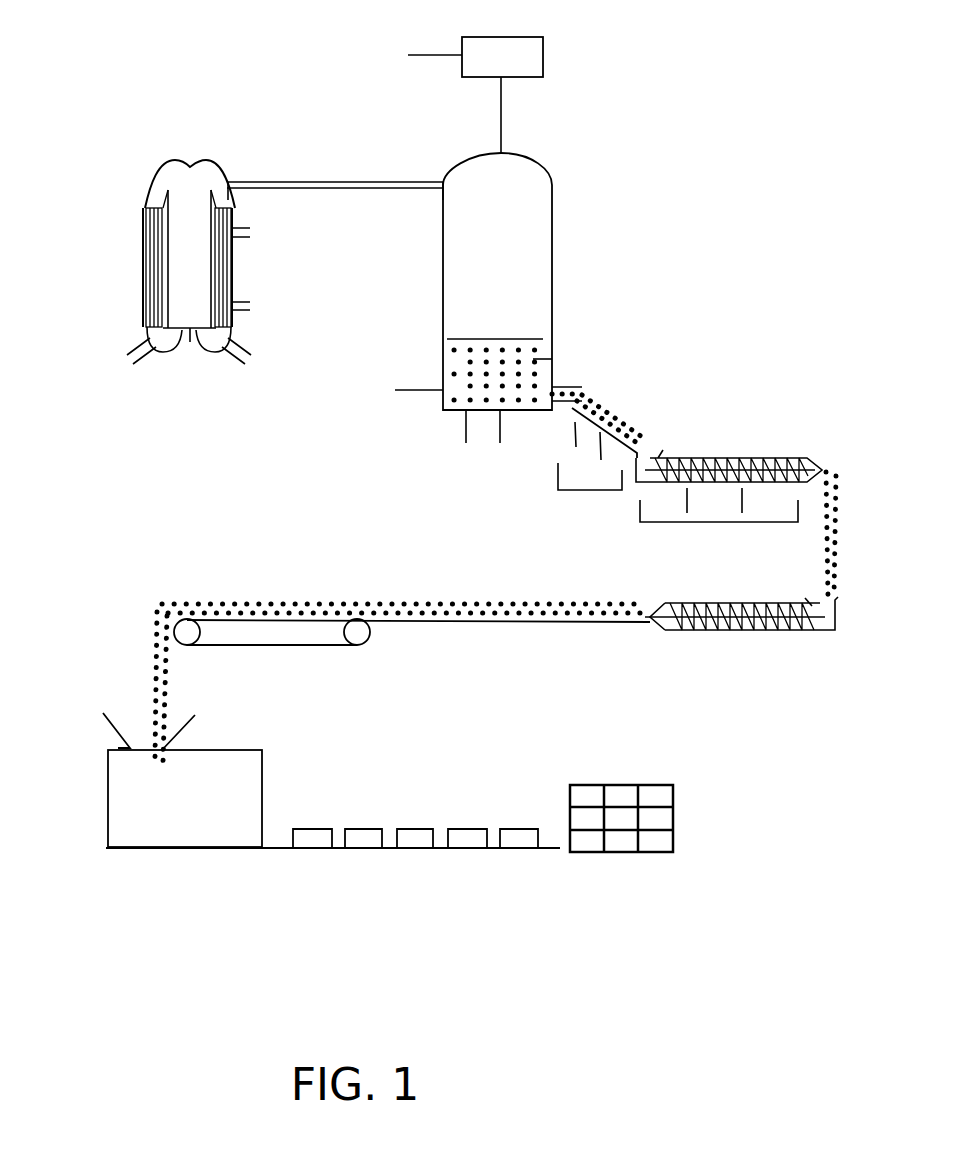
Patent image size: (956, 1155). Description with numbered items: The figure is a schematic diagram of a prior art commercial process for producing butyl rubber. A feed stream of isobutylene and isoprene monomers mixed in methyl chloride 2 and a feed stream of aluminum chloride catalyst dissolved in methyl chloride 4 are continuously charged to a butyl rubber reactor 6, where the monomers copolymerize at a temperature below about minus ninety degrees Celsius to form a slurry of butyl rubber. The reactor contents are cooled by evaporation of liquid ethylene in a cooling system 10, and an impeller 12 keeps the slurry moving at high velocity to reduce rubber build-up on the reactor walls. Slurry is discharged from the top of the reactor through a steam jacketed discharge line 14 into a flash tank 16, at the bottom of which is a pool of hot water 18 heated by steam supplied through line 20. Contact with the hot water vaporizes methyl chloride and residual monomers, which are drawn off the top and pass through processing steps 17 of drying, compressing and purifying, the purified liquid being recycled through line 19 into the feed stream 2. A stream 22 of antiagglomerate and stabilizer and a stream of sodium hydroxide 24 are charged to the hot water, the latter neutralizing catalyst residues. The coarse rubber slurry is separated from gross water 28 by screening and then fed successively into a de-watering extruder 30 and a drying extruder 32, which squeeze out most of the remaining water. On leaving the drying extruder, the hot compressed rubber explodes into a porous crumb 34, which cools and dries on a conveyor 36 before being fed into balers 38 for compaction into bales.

The feed stream of isobutylene and isoprene monomers mixed in methyl chloride 2 is at (250, 358).
The feed stream of aluminum chloride catalyst dissolved in methyl chloride 4 is at (137, 350).
The butyl rubber reactor 6 is at (177, 280).
The cooling system 10 is at (250, 229).
The impeller 12 is at (147, 330).
The steam jacketed discharge line 14 is at (320, 182).
The flash tank 16 is at (481, 267).
The processing steps 17 is at (489, 72).
The pool of hot water 18 is at (552, 359).
The line 19 is at (438, 53).
The line 20 is at (418, 388).
The stream of antiagglomerate and stabilizer 22 is at (500, 428).
The stream of sodium hydroxide 24 is at (465, 428).
The gross water 28 is at (568, 485).
The de-watering extruder 30 is at (742, 458).
The drying extruder 32 is at (777, 627).
The crumb 34 is at (487, 603).
The conveyor 36 is at (313, 635).
The balers 38 is at (163, 812).